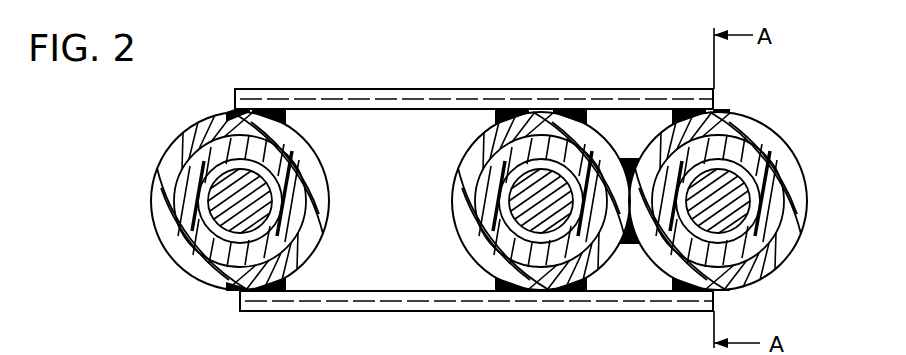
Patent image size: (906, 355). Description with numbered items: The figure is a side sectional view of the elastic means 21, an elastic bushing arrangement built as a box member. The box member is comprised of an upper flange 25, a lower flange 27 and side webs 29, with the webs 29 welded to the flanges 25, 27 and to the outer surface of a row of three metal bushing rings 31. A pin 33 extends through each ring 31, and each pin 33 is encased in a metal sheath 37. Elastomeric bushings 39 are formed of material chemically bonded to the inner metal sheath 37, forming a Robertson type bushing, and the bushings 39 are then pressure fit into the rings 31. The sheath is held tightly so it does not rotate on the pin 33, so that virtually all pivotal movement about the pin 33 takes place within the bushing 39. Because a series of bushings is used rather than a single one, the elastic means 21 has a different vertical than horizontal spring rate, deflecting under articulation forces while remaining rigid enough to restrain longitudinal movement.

The elastic means 21 is at (388, 223).
The upper flange 25 is at (308, 98).
The lower flange 27 is at (298, 305).
The side webs 29 is at (428, 90).
The metal bushing rings 31 is at (163, 170).
The pins 33 is at (250, 204).
The metal sheath 37 is at (195, 278).
The elastomeric bushings 39 is at (218, 147).